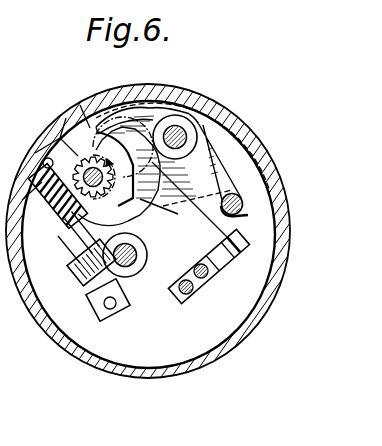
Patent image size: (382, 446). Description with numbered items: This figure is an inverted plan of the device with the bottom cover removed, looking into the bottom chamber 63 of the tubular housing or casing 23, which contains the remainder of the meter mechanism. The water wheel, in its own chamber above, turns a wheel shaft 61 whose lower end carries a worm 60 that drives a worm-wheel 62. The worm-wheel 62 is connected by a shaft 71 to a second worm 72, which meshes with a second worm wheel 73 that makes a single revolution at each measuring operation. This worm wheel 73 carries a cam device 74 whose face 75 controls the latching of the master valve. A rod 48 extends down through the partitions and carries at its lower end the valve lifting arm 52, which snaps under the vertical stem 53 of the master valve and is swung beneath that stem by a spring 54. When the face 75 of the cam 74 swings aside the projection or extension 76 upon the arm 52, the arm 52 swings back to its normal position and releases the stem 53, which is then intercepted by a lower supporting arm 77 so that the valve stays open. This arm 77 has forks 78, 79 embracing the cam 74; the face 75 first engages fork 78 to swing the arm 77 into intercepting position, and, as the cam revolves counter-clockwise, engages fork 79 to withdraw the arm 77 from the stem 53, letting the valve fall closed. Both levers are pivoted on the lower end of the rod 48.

The tubular housing or casing 23 is at (48, 333).
The bottom chamber 63 is at (94, 354).
The fork 79 is at (157, 104).
The projection or extension 76 is at (136, 122).
The cam face 75 is at (88, 128).
The cam device 74 is at (147, 200).
The second worm wheel 73 is at (80, 162).
The second worm 72 is at (58, 222).
The shaft 71 is at (77, 250).
The worm-wheel 62 is at (92, 284).
The worm 60 is at (130, 276).
The wheel shaft 61 is at (137, 259).
The rod 48 is at (178, 150).
The lower supporting arm 77 is at (229, 194).
The vertical stem 53 is at (245, 214).
The fork 78 is at (162, 212).
The valve lifting arm 52 is at (208, 266).
The spring 54 is at (221, 258).